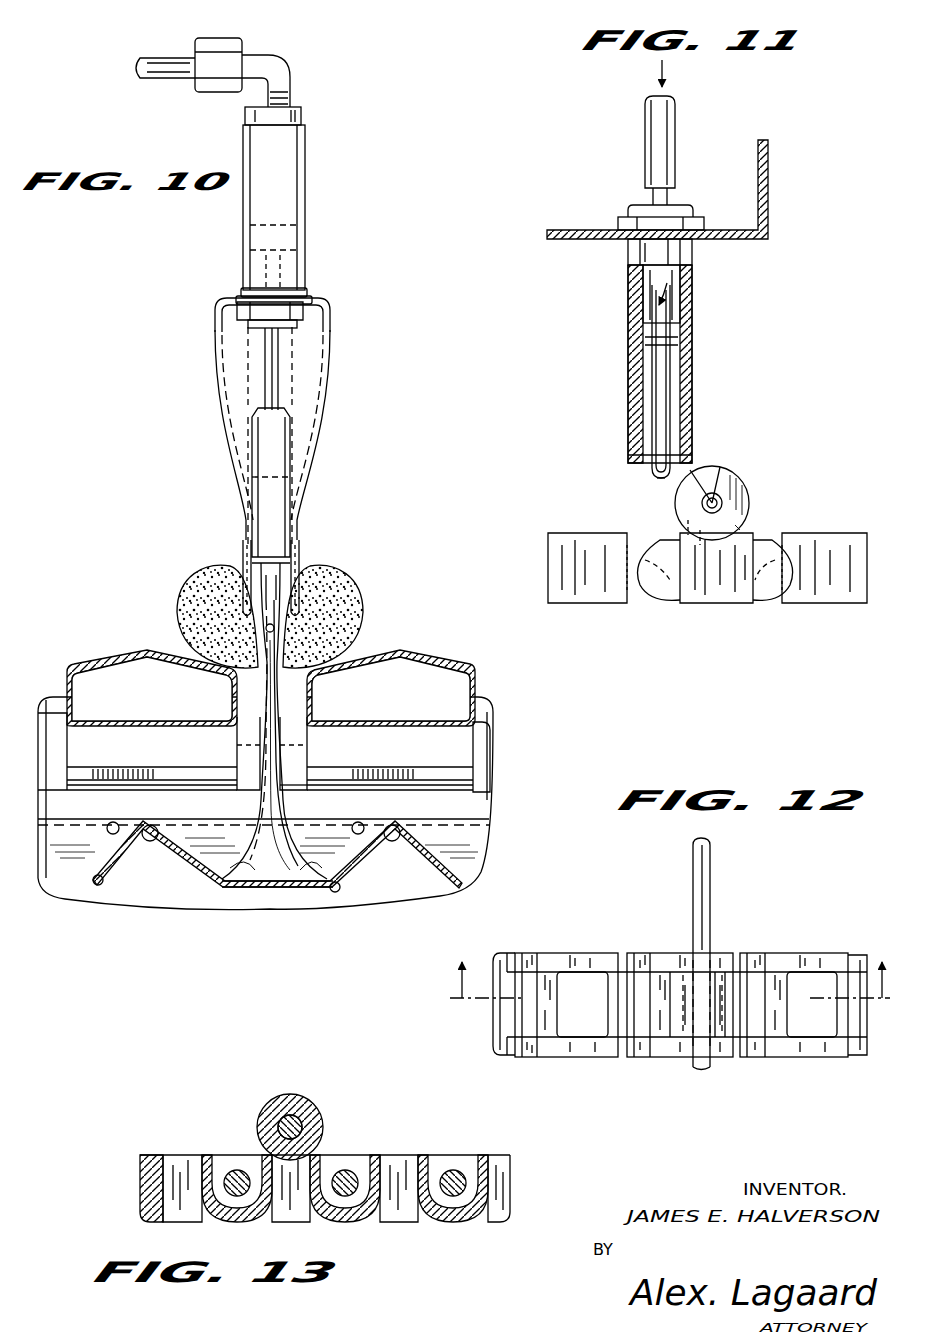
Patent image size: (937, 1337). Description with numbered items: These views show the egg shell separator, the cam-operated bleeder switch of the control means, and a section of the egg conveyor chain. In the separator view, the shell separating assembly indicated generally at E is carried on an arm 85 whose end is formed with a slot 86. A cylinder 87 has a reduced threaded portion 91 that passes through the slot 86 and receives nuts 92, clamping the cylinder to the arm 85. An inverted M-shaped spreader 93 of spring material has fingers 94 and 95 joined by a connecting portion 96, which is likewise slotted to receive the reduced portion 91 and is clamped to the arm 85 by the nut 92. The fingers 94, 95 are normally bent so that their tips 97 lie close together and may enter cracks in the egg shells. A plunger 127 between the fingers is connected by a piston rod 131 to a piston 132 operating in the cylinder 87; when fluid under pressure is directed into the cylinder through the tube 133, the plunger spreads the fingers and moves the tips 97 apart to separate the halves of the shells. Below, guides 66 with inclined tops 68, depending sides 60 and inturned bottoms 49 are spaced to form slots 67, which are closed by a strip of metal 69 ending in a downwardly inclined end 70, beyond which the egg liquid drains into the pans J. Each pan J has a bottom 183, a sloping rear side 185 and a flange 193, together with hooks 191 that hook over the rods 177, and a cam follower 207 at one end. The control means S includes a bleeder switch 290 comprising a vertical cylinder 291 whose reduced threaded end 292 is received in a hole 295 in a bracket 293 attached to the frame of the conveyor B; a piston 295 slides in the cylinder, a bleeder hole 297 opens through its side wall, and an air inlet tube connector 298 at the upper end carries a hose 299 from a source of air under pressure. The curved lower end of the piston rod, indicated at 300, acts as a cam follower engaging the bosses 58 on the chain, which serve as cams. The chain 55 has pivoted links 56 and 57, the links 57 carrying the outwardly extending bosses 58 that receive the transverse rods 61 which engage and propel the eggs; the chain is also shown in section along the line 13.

In FIG. 10, the tube 133 is at (182, 80).
In FIG. 10, the cylinder 87 is at (303, 155).
In FIG. 10, the piston 132 is at (270, 225).
In FIG. 10, the slot 86 is at (288, 290).
In FIG. 10, the arm 85 is at (300, 297).
In FIG. 10, the connecting portion 96 is at (237, 297).
In FIG. 10, the nut 92 is at (303, 309).
In FIG. 10, the reduced threaded portion 91 is at (297, 325).
In FIG. 10, the ejector assembly E is at (213, 343).
In FIG. 10, the piston rod 131 is at (273, 378).
In FIG. 10, the inverted M-shaped spreader 93 is at (328, 421).
In FIG. 10, the finger 94 is at (222, 443).
In FIG. 10, the finger 95 is at (312, 488).
In FIG. 10, the plunger 127 is at (270, 527).
In FIG. 10, the tips 97 is at (230, 572).
In FIG. 10, the guides 66 is at (294, 670).
In FIG. 10, the inclined tops 68 is at (306, 670).
In FIG. 10, the depending sides 60 is at (230, 700).
In FIG. 10, the slots 67 is at (297, 693).
In FIG. 10, the inturned bottoms 49 is at (162, 727).
In FIG. 10, the strip of metal 69 is at (250, 731).
In FIG. 10, the downwardly inclined end 70 is at (297, 793).
In FIG. 10, the flange 193 is at (158, 820).
In FIG. 10, the rods 177 is at (143, 842).
In FIG. 10, the hooks 191 is at (158, 840).
In FIG. 10, the sloping rear side 185 is at (197, 900).
In FIG. 10, the pans J is at (244, 897).
In FIG. 10, the bottom 183 is at (303, 903).
In FIG. 10, the cam follower 207 is at (342, 893).
In FIG. 11, the hose 299 is at (655, 146).
In FIG. 11, the air inlet tube connector 298 is at (670, 196).
In FIG. 11, the bracket 293 is at (768, 238).
In FIG. 11, the piston 295 is at (625, 236).
In FIG. 11, the reduced threaded end 292 is at (693, 254).
In FIG. 11, the bleeder hole 297 is at (632, 314).
In FIG. 11, the bleeder switch 290 is at (703, 396).
In FIG. 11, the vertical cylinder 291 is at (642, 401).
In FIG. 11, the control means S is at (703, 437).
In FIG. 11, the probe tip 300 is at (658, 479).
In FIG. 11, the bosses 58 is at (745, 485).
In FIG. 12, the bosses 58 is at (712, 983).
In FIG. 13, the bosses 58 is at (324, 1122).
In FIG. 11, the rods 61 is at (723, 506).
In FIG. 12, the rods 61 is at (708, 879).
In FIG. 13, the rods 61 is at (303, 1094).
In FIG. 11, the pivoted links 56 is at (568, 540).
In FIG. 12, the pivoted links 56 is at (597, 1058).
In FIG. 13, the pivoted links 56 is at (192, 1222).
In FIG. 11, the pivoted links 57 is at (728, 598).
In FIG. 12, the pivoted links 57 is at (681, 1056).
In FIG. 13, the pivoted links 57 is at (298, 1222).
In FIG. 12, the chain 55 is at (500, 1056).
In FIG. 13, the chain 55 is at (157, 1155).
In FIG. 12, the egg conveyor B is at (605, 912).
In FIG. 13, the egg conveyor B is at (482, 1226).
In FIG. 12, the section line 13 is at (652, 1025).